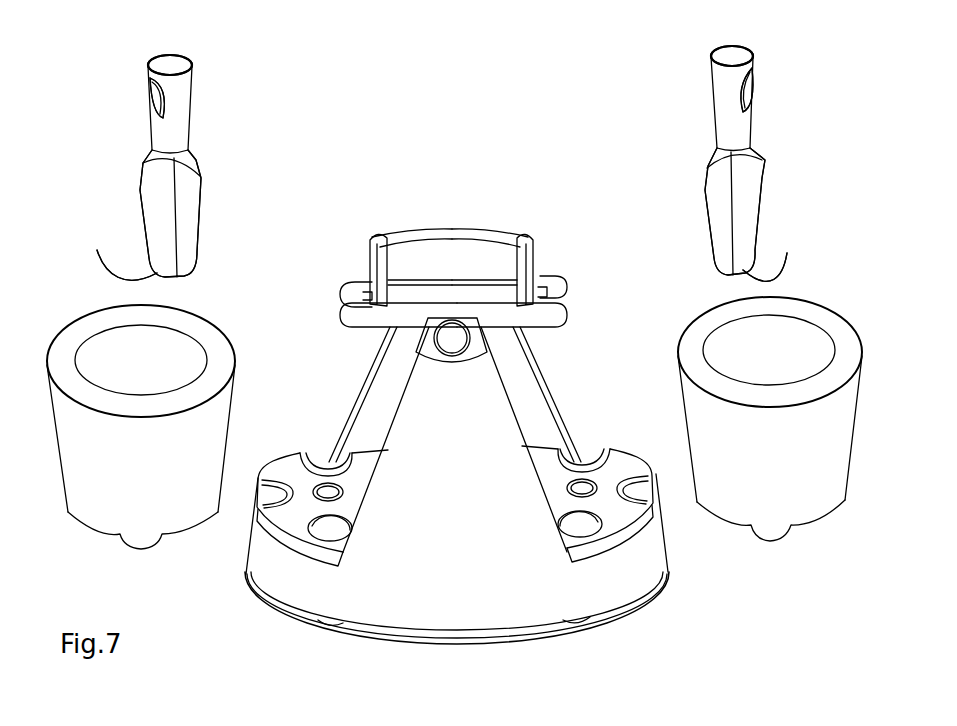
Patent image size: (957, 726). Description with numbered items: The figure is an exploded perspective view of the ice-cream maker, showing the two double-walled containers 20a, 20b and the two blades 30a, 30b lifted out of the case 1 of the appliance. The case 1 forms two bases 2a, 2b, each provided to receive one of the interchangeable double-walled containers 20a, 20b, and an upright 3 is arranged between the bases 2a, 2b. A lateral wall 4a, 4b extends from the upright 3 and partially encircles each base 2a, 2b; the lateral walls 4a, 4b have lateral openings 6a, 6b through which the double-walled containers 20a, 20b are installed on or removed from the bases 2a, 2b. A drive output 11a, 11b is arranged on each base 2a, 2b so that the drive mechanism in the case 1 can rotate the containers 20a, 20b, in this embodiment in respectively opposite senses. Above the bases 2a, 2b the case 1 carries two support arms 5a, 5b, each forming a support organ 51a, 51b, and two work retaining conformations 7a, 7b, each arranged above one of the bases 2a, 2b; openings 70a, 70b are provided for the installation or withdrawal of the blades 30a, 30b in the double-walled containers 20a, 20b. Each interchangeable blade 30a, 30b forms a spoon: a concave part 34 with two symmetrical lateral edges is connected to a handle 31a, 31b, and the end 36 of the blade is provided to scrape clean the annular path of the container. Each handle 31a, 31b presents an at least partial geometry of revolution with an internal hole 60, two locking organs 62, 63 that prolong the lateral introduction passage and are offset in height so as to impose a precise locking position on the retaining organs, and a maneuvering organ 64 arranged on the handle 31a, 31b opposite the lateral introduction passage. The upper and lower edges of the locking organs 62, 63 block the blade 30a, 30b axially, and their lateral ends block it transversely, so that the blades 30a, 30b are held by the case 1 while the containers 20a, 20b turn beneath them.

The case 1 is at (237, 605).
The base 2a is at (607, 547).
The base 2b is at (307, 553).
The upright 3 is at (460, 515).
The lateral wall 4a is at (512, 370).
The lateral wall 4b is at (388, 366).
The support arm 5a is at (500, 300).
The support arm 5b is at (405, 300).
The lateral opening 6a is at (557, 402).
The lateral opening 6b is at (345, 410).
The work retaining conformation 7a is at (570, 293).
The work retaining conformation 7b is at (330, 292).
The drive output 11a is at (613, 500).
The drive output 11b is at (297, 513).
The double-walled container 20a is at (737, 443).
The double-walled container 20b is at (132, 478).
The blade 30a is at (168, 159).
The blade 30b is at (715, 163).
The handle 31a is at (753, 127).
The handle 31b is at (152, 135).
The concave part 34 is at (153, 190).
The end of blade 36 is at (437, 249).
The support organ 51a is at (570, 312).
The support organ 51b is at (330, 313).
The internal hole 60 is at (170, 63).
The locking organ 62 is at (713, 113).
The locking organ 63 is at (188, 128).
The maneuvering organ 64 is at (147, 102).
The opening 70a is at (577, 257).
The opening 70b is at (318, 268).